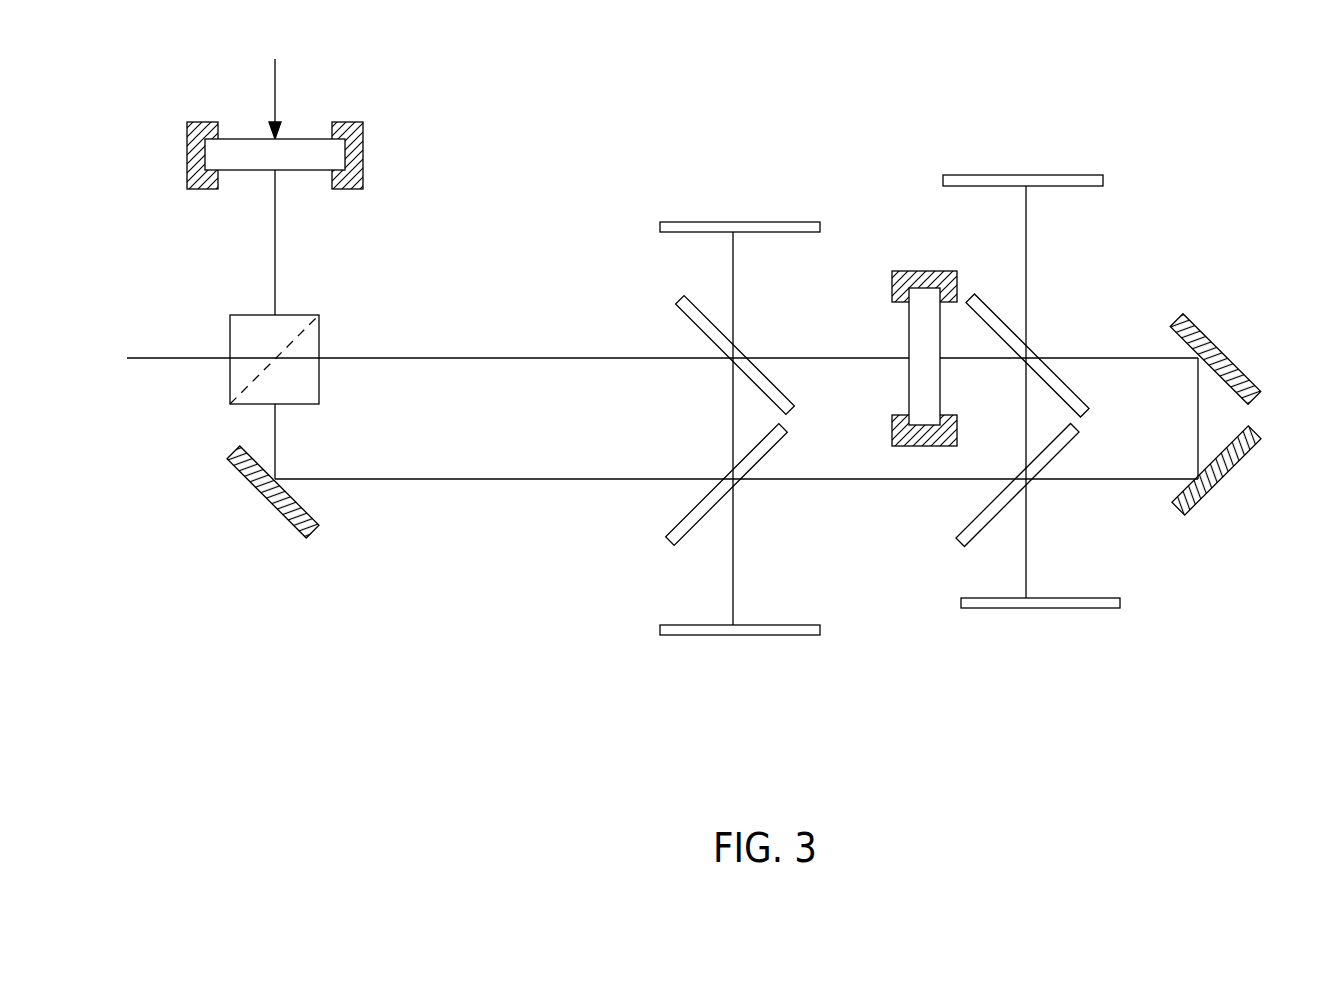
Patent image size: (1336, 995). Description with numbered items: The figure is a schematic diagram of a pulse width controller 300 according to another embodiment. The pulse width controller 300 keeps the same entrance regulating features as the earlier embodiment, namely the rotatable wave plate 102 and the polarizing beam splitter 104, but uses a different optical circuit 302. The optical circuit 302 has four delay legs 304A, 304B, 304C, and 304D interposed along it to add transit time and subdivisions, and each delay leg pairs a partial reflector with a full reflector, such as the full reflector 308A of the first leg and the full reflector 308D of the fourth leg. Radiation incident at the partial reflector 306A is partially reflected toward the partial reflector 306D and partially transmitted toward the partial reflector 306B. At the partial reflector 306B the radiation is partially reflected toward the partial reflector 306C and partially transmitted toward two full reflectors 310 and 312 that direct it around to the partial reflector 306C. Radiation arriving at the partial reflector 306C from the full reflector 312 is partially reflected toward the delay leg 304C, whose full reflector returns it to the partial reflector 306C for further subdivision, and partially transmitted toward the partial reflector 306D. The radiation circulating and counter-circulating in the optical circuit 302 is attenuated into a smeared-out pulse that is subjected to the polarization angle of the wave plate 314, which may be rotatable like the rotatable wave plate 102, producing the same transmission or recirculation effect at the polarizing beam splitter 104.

The rotatable wave plate 102 is at (350, 88).
The polarizing beam splitter 104 is at (288, 313).
The pulse width controller 300 is at (699, 105).
The optical circuit 302 is at (1178, 604).
The delay leg 304A is at (747, 632).
The delay leg 304B is at (1064, 620).
The delay leg 304C is at (1014, 155).
The delay leg 304D is at (732, 381).
The partial reflector 306A is at (684, 520).
The partial reflector 306B is at (973, 515).
The partial reflector 306C is at (995, 313).
The partial reflector 306D is at (688, 316).
The full reflector 308A is at (782, 622).
The full reflector 308D is at (688, 222).
The full reflector 310 is at (1212, 490).
The full reflector 312 is at (1230, 360).
The wave plate 314 is at (913, 271).